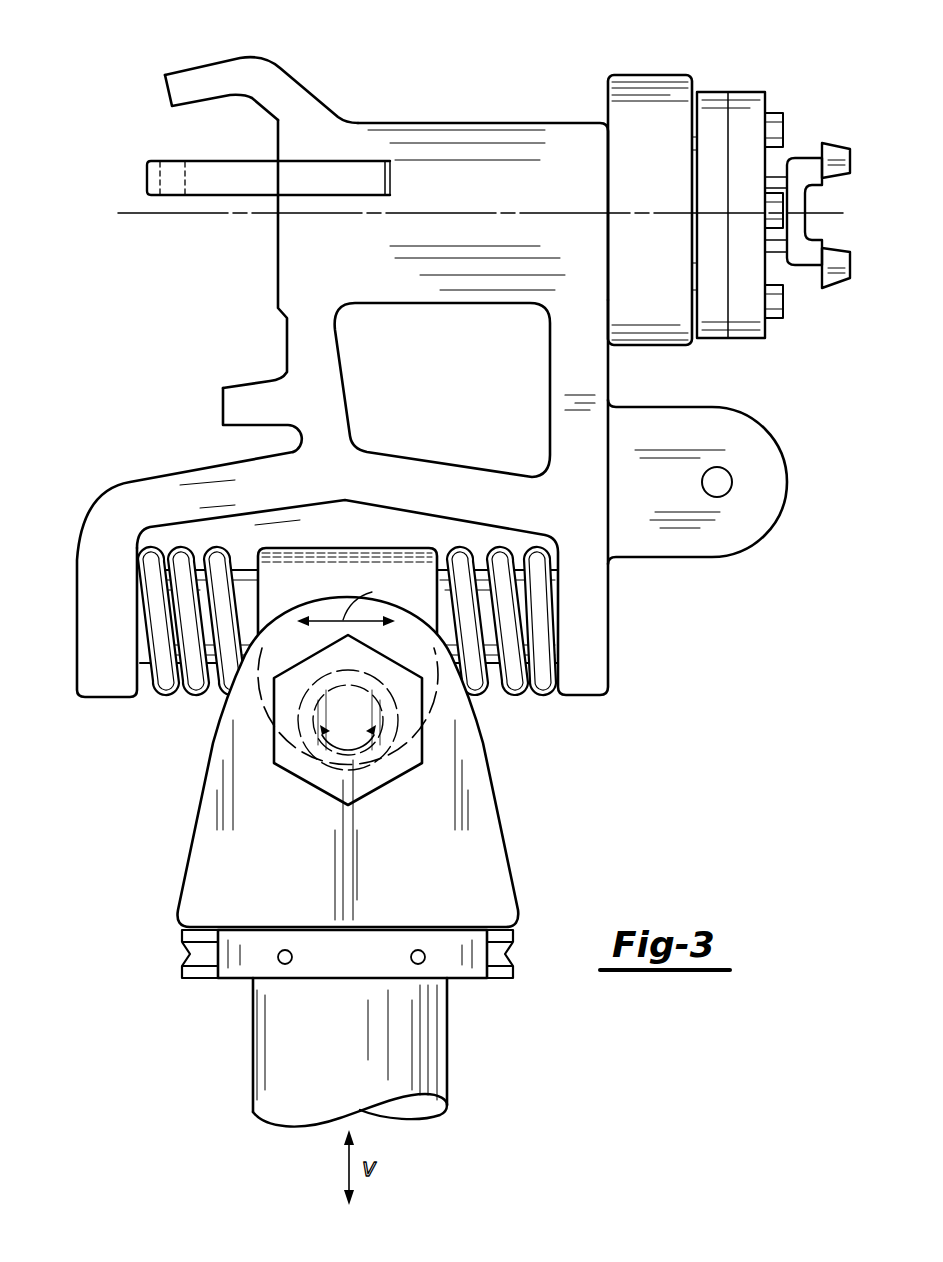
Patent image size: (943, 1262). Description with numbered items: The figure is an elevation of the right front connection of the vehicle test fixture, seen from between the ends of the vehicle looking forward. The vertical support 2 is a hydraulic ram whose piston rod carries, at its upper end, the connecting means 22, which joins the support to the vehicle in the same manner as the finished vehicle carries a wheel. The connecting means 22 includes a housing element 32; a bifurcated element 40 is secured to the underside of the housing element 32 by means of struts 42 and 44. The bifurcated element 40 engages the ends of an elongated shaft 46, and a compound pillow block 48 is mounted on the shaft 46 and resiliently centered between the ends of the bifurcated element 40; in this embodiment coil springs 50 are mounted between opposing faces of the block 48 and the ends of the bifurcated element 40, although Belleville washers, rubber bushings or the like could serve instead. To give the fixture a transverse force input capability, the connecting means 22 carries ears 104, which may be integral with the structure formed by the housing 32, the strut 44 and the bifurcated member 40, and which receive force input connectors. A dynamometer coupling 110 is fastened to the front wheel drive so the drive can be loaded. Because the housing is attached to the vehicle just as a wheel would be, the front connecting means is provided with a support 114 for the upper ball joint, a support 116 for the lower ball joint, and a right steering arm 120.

The vertical support 2 is at (455, 1051).
The connecting means 22 is at (241, 295).
The housing element 32 is at (375, 130).
The bifurcated element 40 is at (155, 490).
The strut 42 is at (335, 386).
The strut 44 is at (565, 382).
The shaft 46 is at (497, 700).
The compound pillow block 48 is at (352, 565).
The coil springs 50 is at (225, 557).
The ears 104 is at (735, 428).
The dynamometer coupling 110 is at (822, 52).
The support for upper ball joint 114 is at (170, 92).
The support for lower ball joint 116 is at (233, 402).
The right steering arm 120 is at (150, 182).